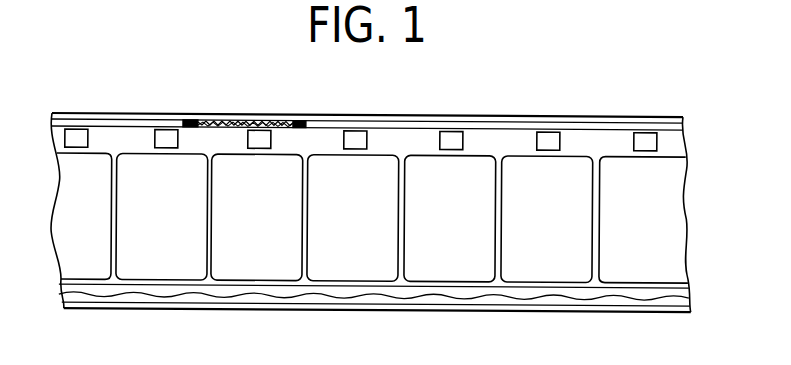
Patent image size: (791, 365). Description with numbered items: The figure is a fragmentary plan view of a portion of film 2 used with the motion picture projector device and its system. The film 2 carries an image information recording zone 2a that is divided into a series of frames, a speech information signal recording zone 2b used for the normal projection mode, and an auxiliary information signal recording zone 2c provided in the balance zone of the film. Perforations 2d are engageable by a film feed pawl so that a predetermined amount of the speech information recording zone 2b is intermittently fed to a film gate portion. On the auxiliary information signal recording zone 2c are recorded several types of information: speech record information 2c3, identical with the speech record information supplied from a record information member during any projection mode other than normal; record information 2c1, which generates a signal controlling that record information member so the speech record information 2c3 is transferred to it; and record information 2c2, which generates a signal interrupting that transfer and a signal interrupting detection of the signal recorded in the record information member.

The film 2 is at (688, 233).
The image information recording zone 2a is at (462, 267).
The speech information signal recording zone 2b is at (548, 292).
The auxiliary information signal recording zone 2c is at (440, 119).
The record information 2c1 is at (300, 112).
The record information 2c2 is at (195, 112).
The speech record information 2c3 is at (256, 112).
The perforations 2d is at (547, 129).